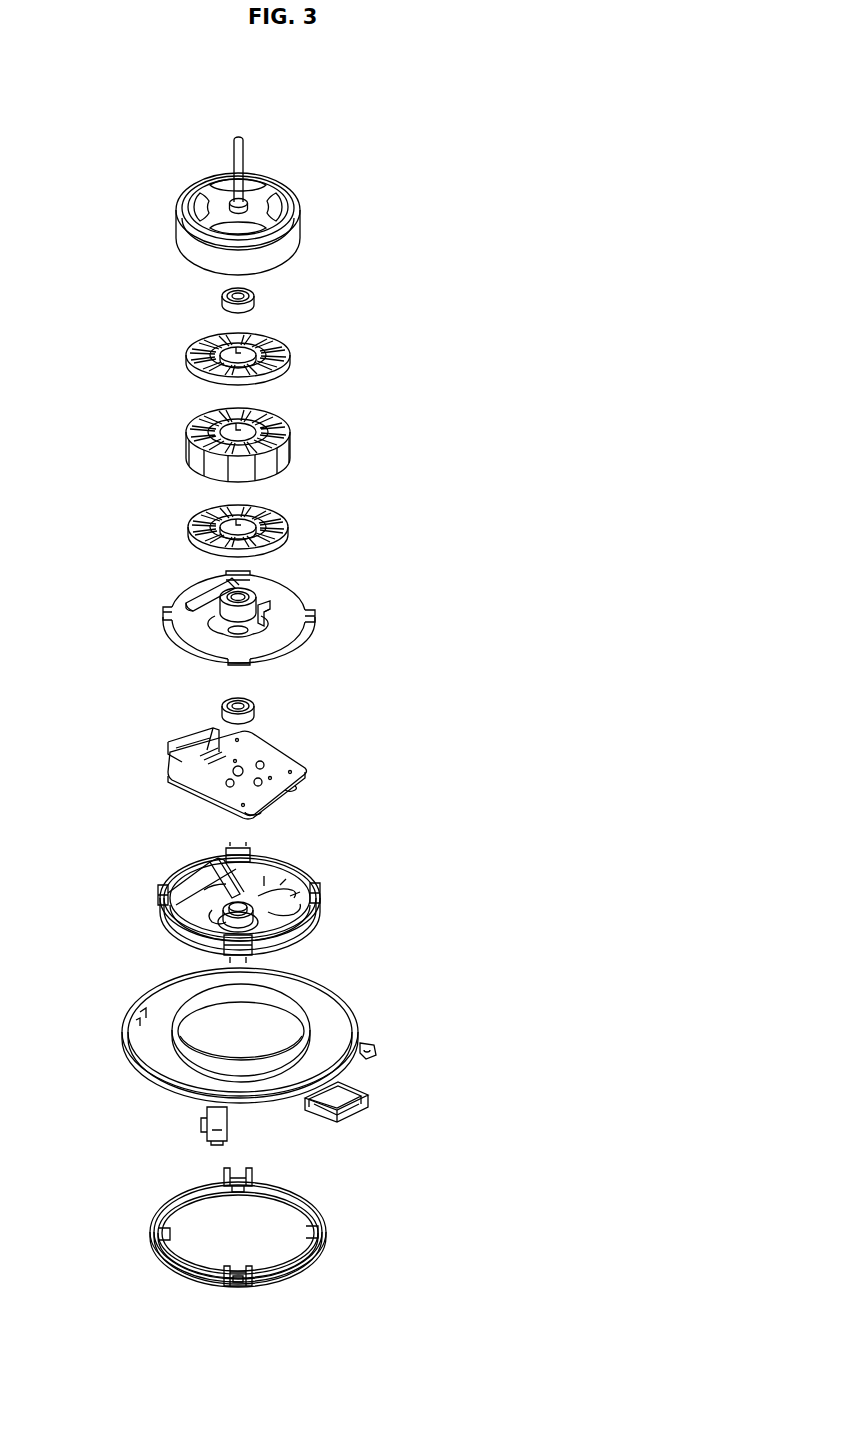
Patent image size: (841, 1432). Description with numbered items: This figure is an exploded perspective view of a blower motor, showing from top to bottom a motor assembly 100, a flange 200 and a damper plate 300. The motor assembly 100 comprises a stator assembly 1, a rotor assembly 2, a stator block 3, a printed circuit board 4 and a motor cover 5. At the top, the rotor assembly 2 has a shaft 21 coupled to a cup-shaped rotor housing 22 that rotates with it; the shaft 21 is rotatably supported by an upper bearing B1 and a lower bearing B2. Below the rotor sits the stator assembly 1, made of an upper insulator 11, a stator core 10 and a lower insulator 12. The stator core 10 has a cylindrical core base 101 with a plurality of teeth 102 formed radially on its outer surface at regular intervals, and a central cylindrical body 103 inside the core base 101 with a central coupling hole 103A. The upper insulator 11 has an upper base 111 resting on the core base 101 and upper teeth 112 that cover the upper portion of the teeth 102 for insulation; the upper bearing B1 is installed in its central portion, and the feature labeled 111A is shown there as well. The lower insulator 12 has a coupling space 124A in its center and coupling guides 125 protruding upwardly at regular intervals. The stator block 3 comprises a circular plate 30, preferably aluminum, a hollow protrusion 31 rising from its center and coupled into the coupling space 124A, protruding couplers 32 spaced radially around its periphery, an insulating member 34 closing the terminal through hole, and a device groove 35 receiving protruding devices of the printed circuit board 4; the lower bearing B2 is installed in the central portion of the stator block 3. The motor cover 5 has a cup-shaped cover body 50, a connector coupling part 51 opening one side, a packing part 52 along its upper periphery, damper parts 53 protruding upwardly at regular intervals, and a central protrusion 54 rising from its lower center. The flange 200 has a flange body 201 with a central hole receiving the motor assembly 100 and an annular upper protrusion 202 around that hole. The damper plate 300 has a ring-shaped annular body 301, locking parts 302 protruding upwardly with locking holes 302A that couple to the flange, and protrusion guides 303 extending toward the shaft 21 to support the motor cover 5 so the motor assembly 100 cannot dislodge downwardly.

The motor assembly 100 is at (466, 186).
The rotor assembly 2 is at (324, 228).
The shaft 21 is at (243, 165).
The rotor housing 22 is at (186, 238).
The upper bearing B1 is at (258, 302).
The stator assembly 1 is at (418, 360).
The upper insulator 11 is at (310, 362).
The upper base 111 is at (192, 363).
The upper plate positioning notch 111A is at (222, 334).
The upper teeth 112 is at (266, 345).
The stator core 10 is at (310, 457).
The core base 101 is at (290, 440).
The teeth 102 is at (266, 418).
The central cylindrical body 103 is at (190, 451).
The central coupling hole 103A is at (220, 424).
The lower insulator 12 is at (308, 508).
The coupling space 124A is at (286, 530).
The coupling guide 125 is at (192, 529).
The stator block 3 is at (325, 600).
The plate 30 is at (288, 594).
The hollow protrusion 31 is at (220, 624).
The protruding coupler 32 is at (256, 578).
The insulating member 34 is at (272, 628).
The device groove 35 is at (184, 592).
The lower bearing B2 is at (258, 714).
The printed circuit board 4 is at (324, 776).
The motor cover 5 is at (356, 898).
The cover body 50 is at (250, 880).
The connector coupling part 51 is at (196, 886).
The packing part 52 is at (172, 932).
The damper parts 53 is at (224, 852).
The central protrusion 54 is at (266, 895).
The flange 200 is at (362, 1000).
The flange body 201 is at (330, 1037).
The upper protrusion 202 is at (182, 1015).
The damper plate 300 is at (354, 1226).
The annular body 301 is at (286, 1188).
The locking parts 302 is at (275, 1150).
The locking hole 302A is at (250, 1288).
The protrusion guides 303 is at (226, 1186).